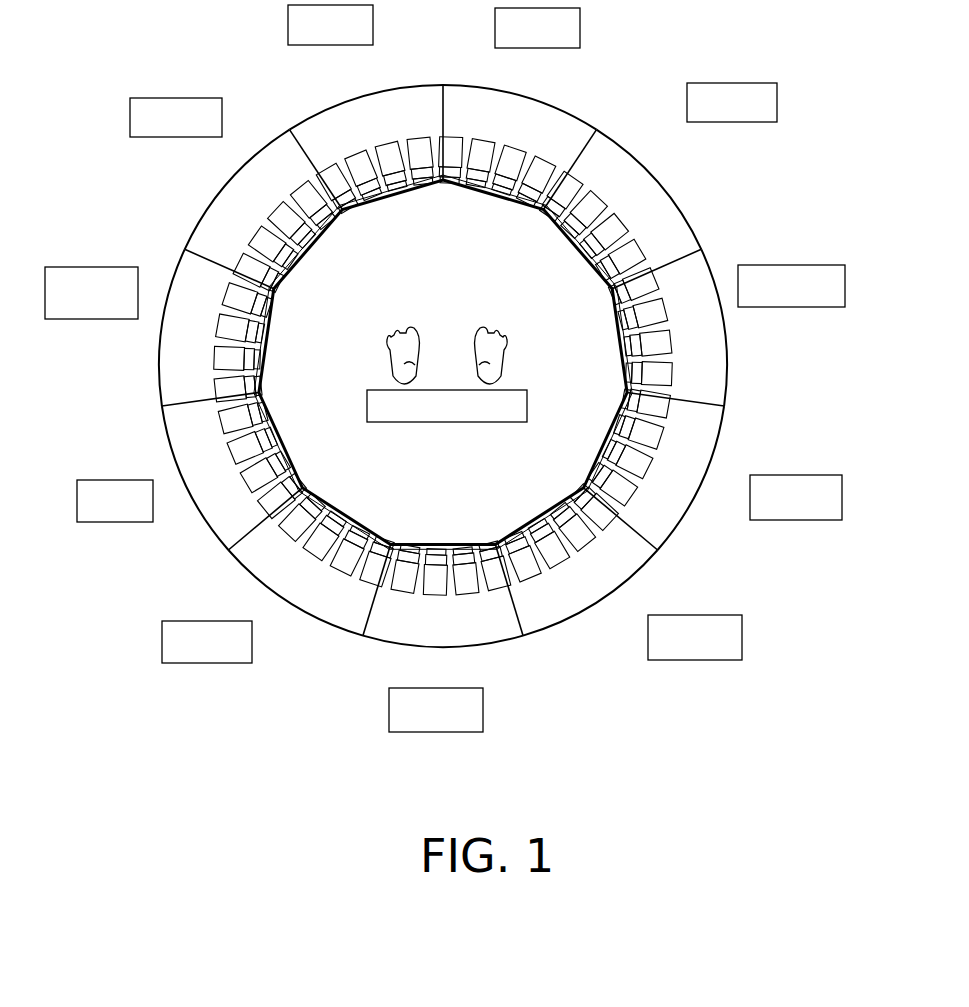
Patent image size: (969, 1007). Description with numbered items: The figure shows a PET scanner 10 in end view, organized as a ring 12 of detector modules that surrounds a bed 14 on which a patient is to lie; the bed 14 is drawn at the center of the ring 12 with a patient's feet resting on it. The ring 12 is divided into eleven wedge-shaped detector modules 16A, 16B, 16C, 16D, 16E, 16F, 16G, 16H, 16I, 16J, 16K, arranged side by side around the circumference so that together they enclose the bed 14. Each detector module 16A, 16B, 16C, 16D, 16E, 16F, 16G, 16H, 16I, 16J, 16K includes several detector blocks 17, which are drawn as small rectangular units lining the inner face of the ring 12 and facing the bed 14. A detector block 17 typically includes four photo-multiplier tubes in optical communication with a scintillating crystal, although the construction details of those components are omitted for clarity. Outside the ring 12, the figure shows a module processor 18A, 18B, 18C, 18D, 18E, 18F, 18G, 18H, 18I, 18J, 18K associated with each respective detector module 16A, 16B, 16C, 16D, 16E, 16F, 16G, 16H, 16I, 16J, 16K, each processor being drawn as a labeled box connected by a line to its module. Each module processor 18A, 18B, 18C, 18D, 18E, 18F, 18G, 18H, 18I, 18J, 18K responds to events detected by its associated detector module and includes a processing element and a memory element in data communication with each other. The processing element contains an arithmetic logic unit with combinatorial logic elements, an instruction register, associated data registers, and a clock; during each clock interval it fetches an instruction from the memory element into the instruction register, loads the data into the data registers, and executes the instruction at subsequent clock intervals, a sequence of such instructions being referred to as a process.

The PET scanner 10 is at (650, 38).
The ring 12 is at (566, 254).
The bed 14 is at (433, 423).
The detector module 16A is at (549, 101).
The detector module 16B is at (673, 200).
The detector module 16C is at (715, 270).
The detector module 16D is at (718, 443).
The detector module 16E is at (640, 570).
The detector module 16F is at (480, 647).
The detector module 16G is at (294, 617).
The detector module 16H is at (197, 512).
The detector module 16I is at (157, 355).
The detector module 16J is at (200, 217).
The detector module 16K is at (352, 98).
The detector block 17 is at (457, 137).
The module processor 18A is at (523, 92).
The module processor 18B is at (663, 180).
The module processor 18C is at (728, 352).
The module processor 18D is at (698, 483).
The module processor 18E is at (597, 602).
The module processor 18F is at (447, 647).
The module processor 18G is at (268, 592).
The module processor 18H is at (187, 493).
The module processor 18I is at (165, 308).
The module processor 18J is at (235, 173).
The module processor 18K is at (388, 84).